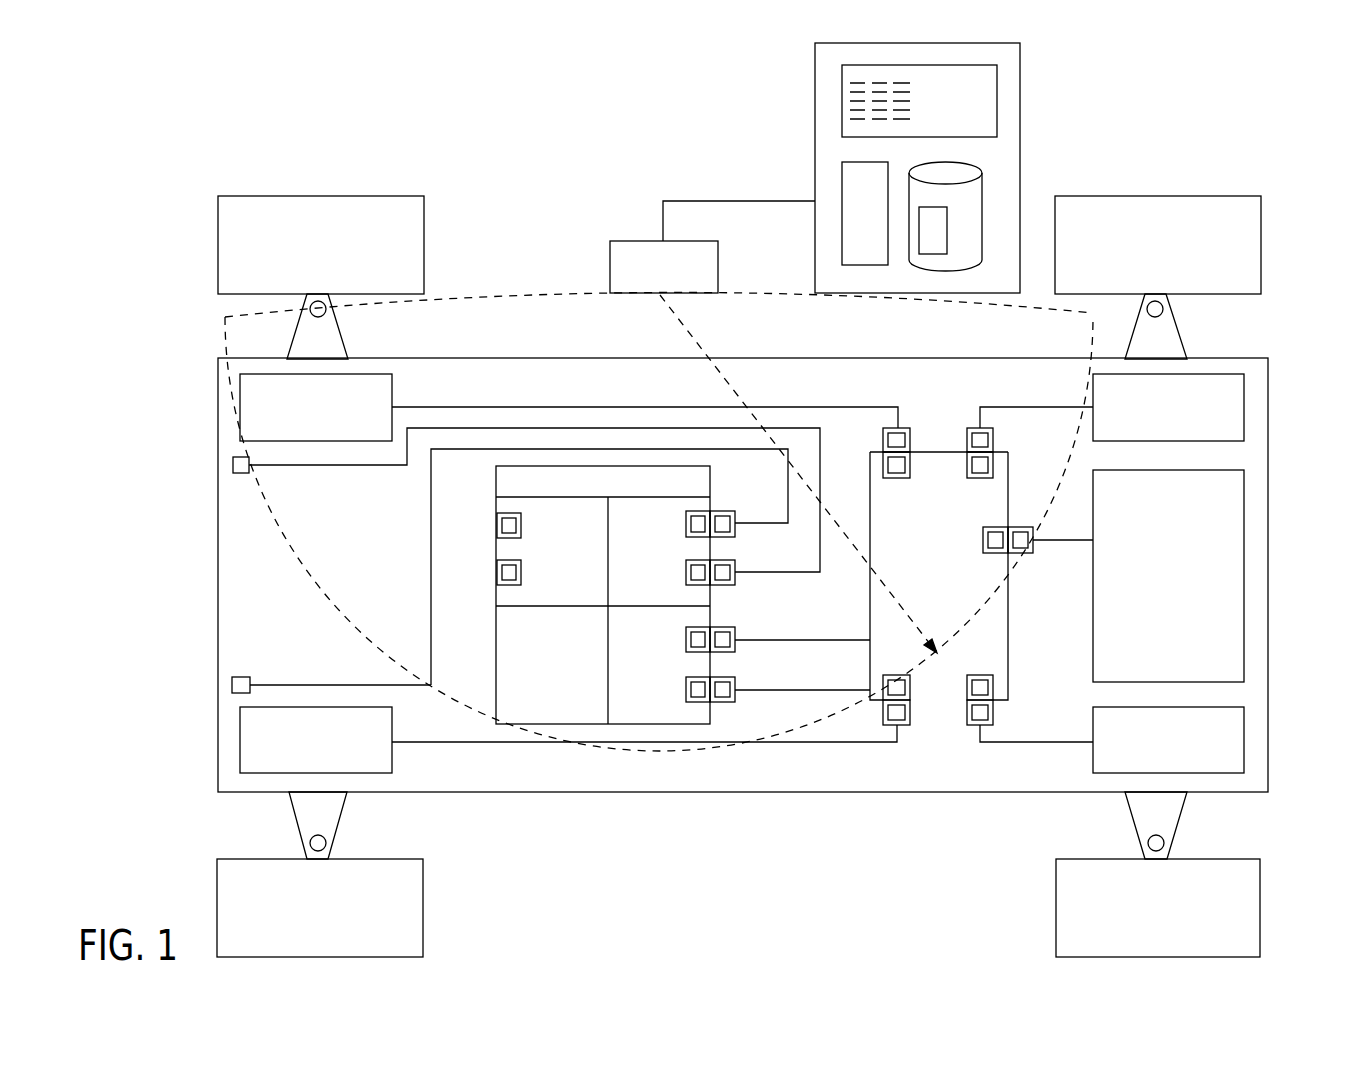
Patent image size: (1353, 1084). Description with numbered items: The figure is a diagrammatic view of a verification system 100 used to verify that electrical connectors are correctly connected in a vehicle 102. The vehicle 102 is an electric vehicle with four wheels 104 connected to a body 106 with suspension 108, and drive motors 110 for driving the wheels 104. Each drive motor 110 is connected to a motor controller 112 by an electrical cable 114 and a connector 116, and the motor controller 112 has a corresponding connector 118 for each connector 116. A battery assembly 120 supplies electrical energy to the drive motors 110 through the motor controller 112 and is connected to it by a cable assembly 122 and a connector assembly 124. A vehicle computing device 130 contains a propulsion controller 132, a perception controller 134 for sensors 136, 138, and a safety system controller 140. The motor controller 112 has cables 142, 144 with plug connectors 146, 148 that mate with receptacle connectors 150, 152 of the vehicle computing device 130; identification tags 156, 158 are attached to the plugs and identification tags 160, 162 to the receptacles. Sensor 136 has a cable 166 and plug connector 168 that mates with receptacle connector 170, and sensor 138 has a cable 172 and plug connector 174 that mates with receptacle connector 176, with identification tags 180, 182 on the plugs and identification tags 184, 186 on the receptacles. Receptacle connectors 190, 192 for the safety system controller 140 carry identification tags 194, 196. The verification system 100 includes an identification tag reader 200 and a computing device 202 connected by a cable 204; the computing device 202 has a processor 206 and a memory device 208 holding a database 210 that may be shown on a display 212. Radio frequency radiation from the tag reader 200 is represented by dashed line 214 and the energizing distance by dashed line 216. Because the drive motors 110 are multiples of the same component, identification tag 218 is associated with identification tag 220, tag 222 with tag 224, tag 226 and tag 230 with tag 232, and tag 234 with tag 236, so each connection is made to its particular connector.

The verification system 100 is at (1105, 96).
The vehicle 102 is at (472, 178).
The wheels 104 is at (218, 228).
The body 106 is at (632, 792).
The suspension 108 is at (331, 307).
The drive motors 110 is at (742, 573).
The motor controller 112 is at (939, 576).
The electrical cable 114 is at (452, 407).
The connector 116 is at (910, 440).
The corresponding connector 118 is at (910, 467).
The battery assembly 120 is at (1168, 576).
The cable assembly 122 is at (1062, 545).
The connector assembly 124 is at (1035, 495).
The vehicle computing device 130 is at (603, 595).
The propulsion controller 132 is at (690, 715).
The perception controller 134 is at (685, 505).
The sensor 136 is at (245, 473).
The sensor 138 is at (240, 677).
The safety system controller 140 is at (505, 504).
The cable 142 is at (825, 640).
The cable 144 is at (825, 690).
The plug connector 146 is at (735, 635).
The plug connector 148 is at (735, 685).
The receptacle connector 150 is at (686, 636).
The receptacle connector 152 is at (686, 696).
The identification tag 156 is at (735, 645).
The identification tag 158 is at (735, 695).
The identification tag 160 is at (686, 645).
The identification tag 162 is at (686, 685).
The cable 166 is at (317, 465).
The plug connector 168 is at (735, 516).
The receptacle connector 170 is at (686, 518).
The cable 172 is at (310, 685).
The plug connector 174 is at (735, 575).
The receptacle connector 176 is at (686, 583).
The identification tag 180 is at (735, 528).
The identification tag 182 is at (735, 567).
The identification tag 184 is at (686, 528).
The identification tag 186 is at (686, 570).
The receptacle connector 190 is at (522, 525).
The receptacle connector 192 is at (522, 572).
The identification tag 194 is at (498, 525).
The identification tag 196 is at (498, 572).
The identification tag reader 200 is at (664, 267).
The computing device 202 is at (1020, 158).
The cable 204 is at (693, 201).
The processor 206 is at (865, 213).
The memory device 208 is at (967, 195).
The database 210 is at (850, 88).
The display 212 is at (997, 88).
The radio frequency electromagnetic radiation 214 is at (330, 597).
The distance 216 is at (845, 552).
The identification tag 218 is at (883, 440).
The identification tag 220 is at (873, 452).
The identification tag 222 is at (975, 428).
The identification tag 224 is at (977, 478).
The identification tag 226 is at (905, 694).
The identification tag 230 is at (993, 690).
The identification tag 232 is at (910, 712).
The identification tag 234 is at (983, 540).
The identification tag 236 is at (1003, 553).